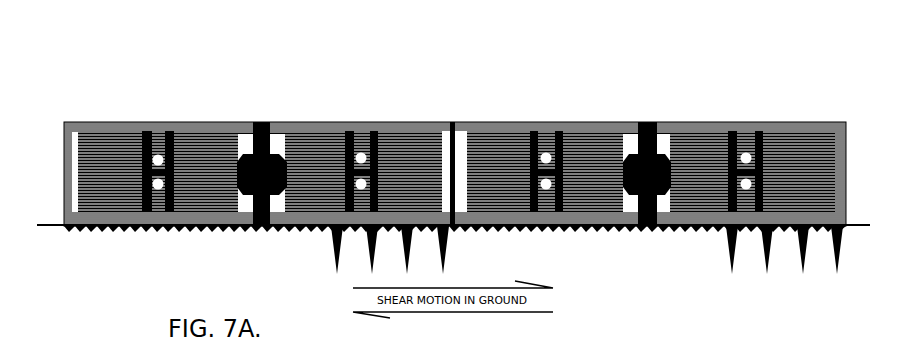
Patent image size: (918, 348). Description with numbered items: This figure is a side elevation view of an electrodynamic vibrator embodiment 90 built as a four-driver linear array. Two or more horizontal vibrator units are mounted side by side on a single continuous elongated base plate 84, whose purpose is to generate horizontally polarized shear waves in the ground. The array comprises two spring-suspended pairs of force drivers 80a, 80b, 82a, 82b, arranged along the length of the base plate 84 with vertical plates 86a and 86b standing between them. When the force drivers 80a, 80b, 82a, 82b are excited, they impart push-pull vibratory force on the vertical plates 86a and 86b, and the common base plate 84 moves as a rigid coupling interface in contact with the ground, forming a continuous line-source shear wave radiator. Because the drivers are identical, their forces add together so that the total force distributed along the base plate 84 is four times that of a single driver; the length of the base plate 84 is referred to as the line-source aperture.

The electrodynamic vibrator embodiment 90 is at (613, 93).
The force driver 82b is at (102, 147).
The vertical plate 86b is at (260, 125).
The force driver 82a is at (417, 127).
The force driver 80b is at (492, 158).
The vertical plate 86a is at (650, 125).
The force driver 80a is at (798, 152).
The base plate 84 is at (613, 230).